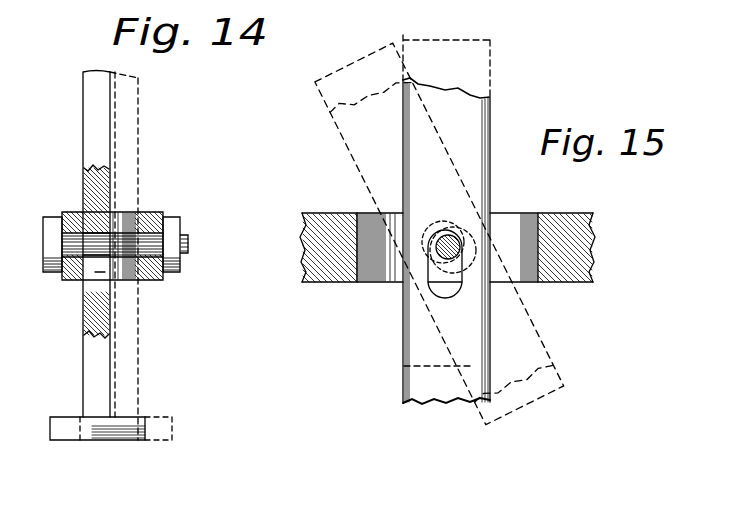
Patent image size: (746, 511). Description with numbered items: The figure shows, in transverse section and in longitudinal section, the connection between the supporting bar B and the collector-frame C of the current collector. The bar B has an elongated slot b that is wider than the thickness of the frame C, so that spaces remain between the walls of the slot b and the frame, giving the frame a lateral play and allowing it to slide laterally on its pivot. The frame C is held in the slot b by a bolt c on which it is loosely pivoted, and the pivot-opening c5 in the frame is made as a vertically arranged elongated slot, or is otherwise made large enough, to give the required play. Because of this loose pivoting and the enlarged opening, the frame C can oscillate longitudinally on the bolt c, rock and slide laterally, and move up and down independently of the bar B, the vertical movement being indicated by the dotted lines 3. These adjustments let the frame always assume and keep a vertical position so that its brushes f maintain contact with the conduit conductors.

In FIG. 14, the collector-frame C is at (95, 256).
In FIG. 15, the collector-frame C is at (456, 219).
In FIG. 14, the bar B is at (178, 205).
In FIG. 15, the bar B is at (580, 201).
In FIG. 14, the elongated slot b is at (125, 218).
In FIG. 15, the elongated slot b is at (380, 282).
In FIG. 14, the bolt c is at (115, 244).
In FIG. 15, the bolt c is at (460, 246).
In FIG. 14, the pivot-opening c5 is at (74, 288).
In FIG. 15, the pivot-opening c5 is at (447, 290).
In FIG. 14, the brushes f is at (52, 407).
In FIG. 15, the dotted lines 3 is at (439, 234).